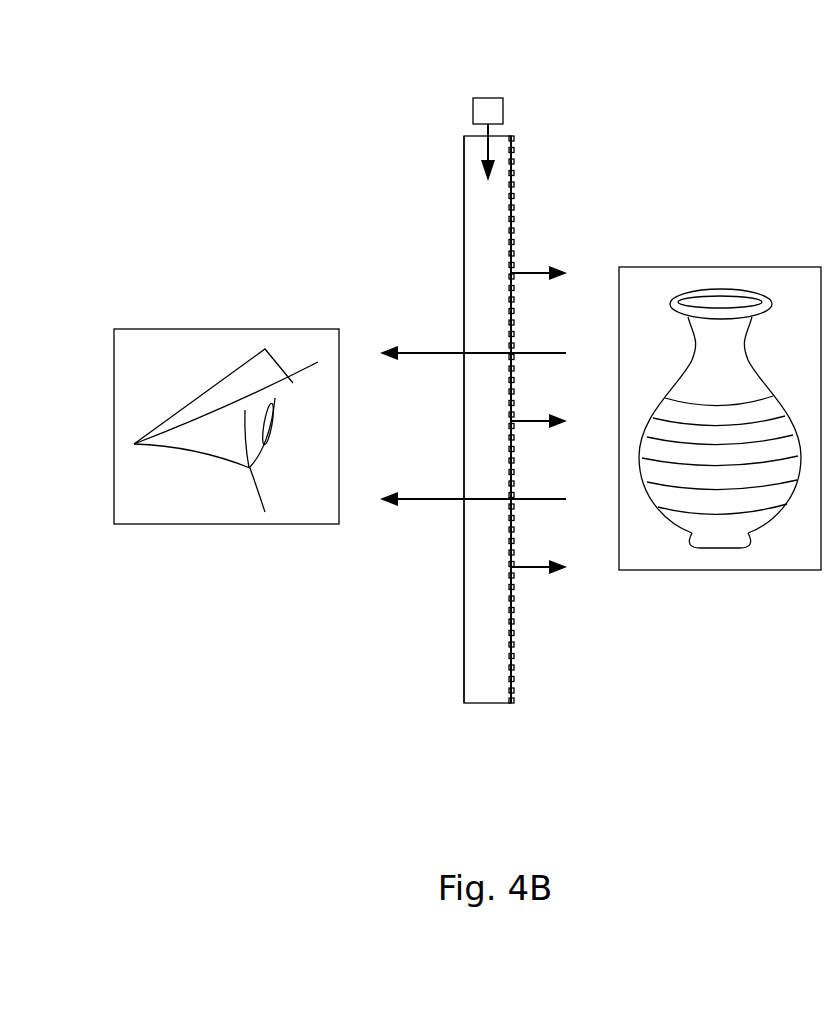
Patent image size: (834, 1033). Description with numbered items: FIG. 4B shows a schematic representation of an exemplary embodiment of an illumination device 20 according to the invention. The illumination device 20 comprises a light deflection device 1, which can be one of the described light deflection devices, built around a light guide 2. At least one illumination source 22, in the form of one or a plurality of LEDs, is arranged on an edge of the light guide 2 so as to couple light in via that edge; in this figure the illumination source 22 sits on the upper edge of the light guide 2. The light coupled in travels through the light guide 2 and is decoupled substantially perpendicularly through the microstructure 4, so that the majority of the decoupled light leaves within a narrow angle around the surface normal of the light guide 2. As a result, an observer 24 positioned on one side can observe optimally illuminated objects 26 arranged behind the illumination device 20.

The light deflection device 1 is at (440, 160).
The light guide 2 is at (480, 302).
The microstructure 4 is at (532, 201).
The illumination device 20 is at (436, 74).
The illumination source 22 is at (493, 110).
The observer 24 is at (185, 329).
The objects 26 is at (757, 267).